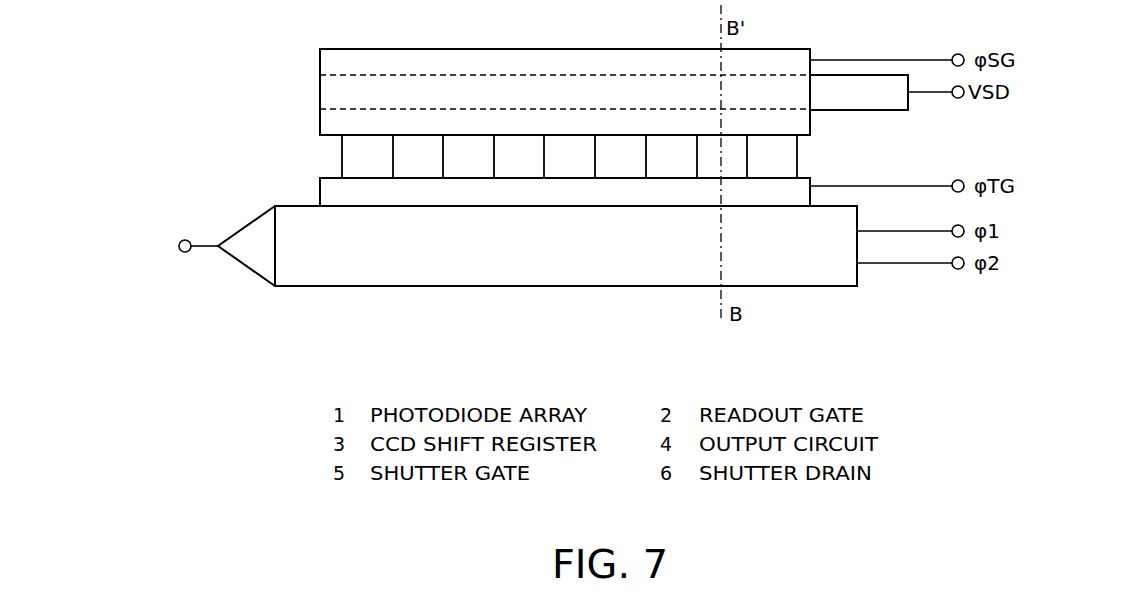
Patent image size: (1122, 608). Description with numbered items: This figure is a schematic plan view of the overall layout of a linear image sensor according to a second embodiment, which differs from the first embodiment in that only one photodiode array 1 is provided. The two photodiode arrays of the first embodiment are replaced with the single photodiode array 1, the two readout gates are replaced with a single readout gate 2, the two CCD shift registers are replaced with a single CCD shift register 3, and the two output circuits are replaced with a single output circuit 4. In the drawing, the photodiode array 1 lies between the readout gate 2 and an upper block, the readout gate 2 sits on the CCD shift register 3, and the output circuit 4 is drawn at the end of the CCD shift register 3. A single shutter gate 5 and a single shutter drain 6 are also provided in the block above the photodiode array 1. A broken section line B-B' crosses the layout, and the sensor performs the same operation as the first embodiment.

The photodiode array 1 is at (347, 155).
The readout gate 2 is at (326, 191).
The CCD shift register 3 is at (488, 277).
The output circuit 4 is at (245, 258).
The shutter gate 5 is at (328, 60).
The shutter drain 6 is at (328, 92).